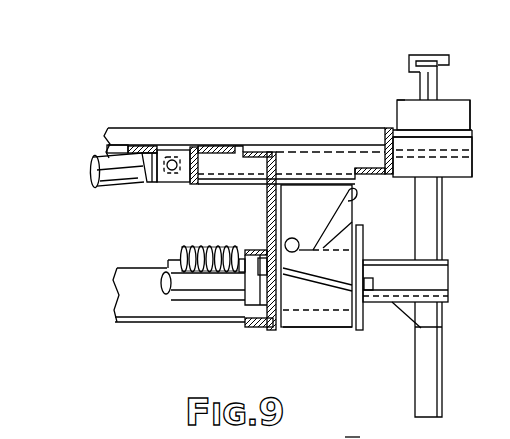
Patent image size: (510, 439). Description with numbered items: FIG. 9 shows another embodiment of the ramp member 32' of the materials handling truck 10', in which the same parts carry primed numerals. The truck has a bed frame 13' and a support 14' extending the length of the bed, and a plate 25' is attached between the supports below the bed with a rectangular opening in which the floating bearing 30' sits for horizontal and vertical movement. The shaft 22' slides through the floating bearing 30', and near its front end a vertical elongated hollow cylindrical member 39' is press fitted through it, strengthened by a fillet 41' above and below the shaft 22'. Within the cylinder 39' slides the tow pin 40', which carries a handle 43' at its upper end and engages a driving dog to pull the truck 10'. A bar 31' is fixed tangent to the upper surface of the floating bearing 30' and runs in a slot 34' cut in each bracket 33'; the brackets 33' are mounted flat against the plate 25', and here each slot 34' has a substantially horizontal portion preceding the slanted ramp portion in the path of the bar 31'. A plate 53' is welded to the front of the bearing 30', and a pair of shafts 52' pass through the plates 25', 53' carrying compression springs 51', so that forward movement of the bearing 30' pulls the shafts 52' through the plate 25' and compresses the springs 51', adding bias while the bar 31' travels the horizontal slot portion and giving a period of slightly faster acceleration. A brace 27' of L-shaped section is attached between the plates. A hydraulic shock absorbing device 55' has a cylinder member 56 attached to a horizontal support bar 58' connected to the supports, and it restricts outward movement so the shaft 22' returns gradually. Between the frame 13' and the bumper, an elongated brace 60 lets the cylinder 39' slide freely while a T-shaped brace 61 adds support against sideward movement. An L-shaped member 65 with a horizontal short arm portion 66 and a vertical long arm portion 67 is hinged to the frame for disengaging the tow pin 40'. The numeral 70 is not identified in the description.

The materials handling truck 10' is at (298, 244).
The frame 13' is at (248, 128).
The support 14' is at (256, 129).
The horizontal support bar 58' is at (196, 135).
The short arm portion 66 is at (400, 100).
The long arm portion 67 is at (403, 113).
The handle 43' is at (451, 61).
The tow pin 40' is at (454, 241).
The L-shaped member 65 is at (484, 105).
The T-shaped brace 61 is at (472, 132).
The elongated brace 60 is at (472, 166).
The hydraulic shock absorbing device 55' is at (115, 193).
The cylinder member 56 is at (122, 187).
The shaft 22' is at (305, 271).
The shaft 52' is at (169, 248).
The compression spring 51' is at (212, 240).
The plate 25' is at (272, 238).
The bar 31' is at (304, 223).
The slot 34' is at (356, 219).
The plate 53' is at (380, 273).
The fillet 41' is at (397, 304).
The elongated hollow cylindrical member 39' is at (455, 218).
The brace 27' is at (179, 316).
The floating bearing 30' is at (245, 308).
The bracket 33' is at (316, 276).
The ramp member 32' is at (327, 345).
The member 70 is at (341, 429).